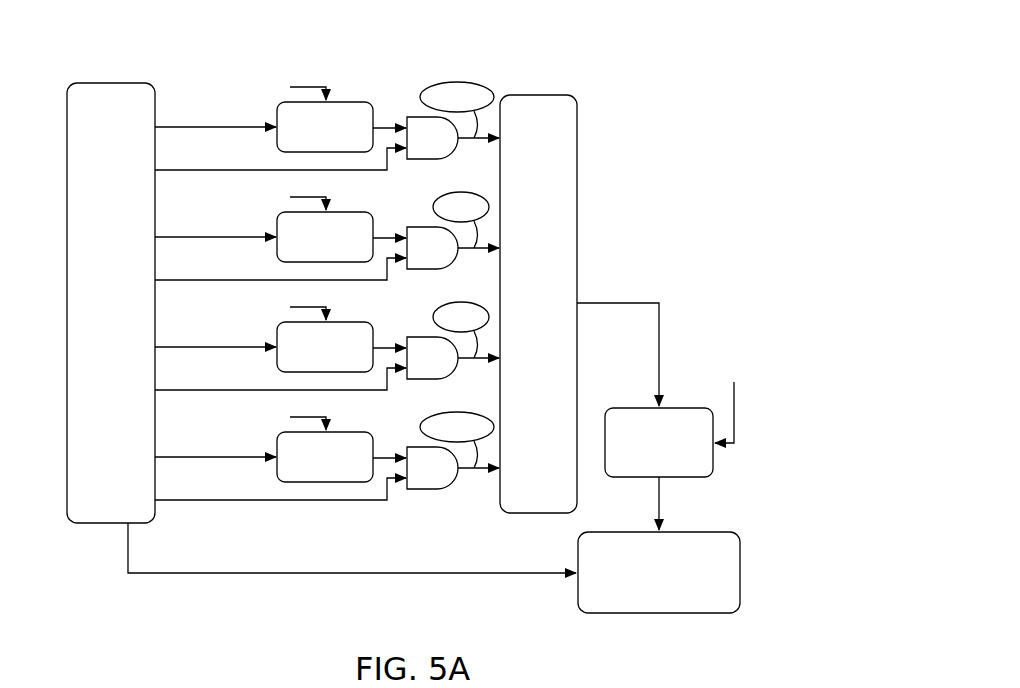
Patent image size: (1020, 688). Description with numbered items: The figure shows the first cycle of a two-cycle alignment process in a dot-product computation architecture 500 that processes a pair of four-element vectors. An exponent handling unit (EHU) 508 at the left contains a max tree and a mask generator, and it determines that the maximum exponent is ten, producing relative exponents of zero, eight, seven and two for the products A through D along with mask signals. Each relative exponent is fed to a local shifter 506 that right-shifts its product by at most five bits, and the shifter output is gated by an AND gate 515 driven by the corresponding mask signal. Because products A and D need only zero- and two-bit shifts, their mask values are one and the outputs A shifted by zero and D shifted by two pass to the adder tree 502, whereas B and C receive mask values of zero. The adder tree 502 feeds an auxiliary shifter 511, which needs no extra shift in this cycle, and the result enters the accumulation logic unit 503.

The dot-product computation architecture 500 is at (171, 67).
The adder tree 502 is at (577, 195).
The accumulation logic unit 503 is at (592, 613).
The local shifter 506 is at (360, 102).
The exponent handling unit (EHU) 508 is at (102, 523).
The auxiliary shifter 511 is at (695, 477).
The AND gate 515 is at (447, 158).